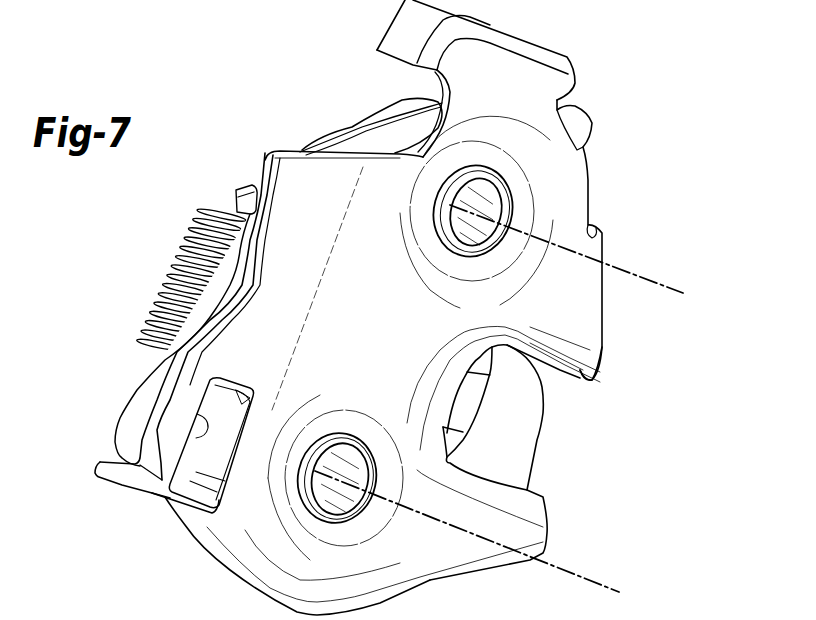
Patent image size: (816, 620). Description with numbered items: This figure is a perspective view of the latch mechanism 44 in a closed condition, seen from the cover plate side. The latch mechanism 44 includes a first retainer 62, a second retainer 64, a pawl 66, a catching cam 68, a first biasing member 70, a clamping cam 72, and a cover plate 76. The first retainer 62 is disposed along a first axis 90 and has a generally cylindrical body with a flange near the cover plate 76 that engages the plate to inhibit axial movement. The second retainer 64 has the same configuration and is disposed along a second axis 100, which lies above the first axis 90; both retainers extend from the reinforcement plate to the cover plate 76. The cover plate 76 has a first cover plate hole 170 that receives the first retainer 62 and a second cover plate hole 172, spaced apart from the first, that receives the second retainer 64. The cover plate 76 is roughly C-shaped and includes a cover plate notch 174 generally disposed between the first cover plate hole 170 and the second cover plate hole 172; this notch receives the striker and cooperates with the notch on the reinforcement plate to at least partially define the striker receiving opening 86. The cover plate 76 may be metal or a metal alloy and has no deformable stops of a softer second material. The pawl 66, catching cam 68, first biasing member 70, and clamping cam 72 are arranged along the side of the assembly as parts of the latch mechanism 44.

The latch mechanism 44 is at (195, 56).
The first retainer 62 is at (357, 446).
The second retainer 64 is at (497, 180).
The pawl 66 is at (130, 386).
The catching cam 68 is at (240, 185).
The first biasing member 70 is at (172, 263).
The clamping cam 72 is at (347, 130).
The cover plate 76 is at (225, 570).
The striker receiving opening 86 is at (547, 459).
The first axis 90 is at (606, 585).
The second axis 100 is at (650, 268).
The first cover plate hole 170 is at (367, 507).
The second cover plate hole 172 is at (513, 207).
The cover plate notch 174 is at (587, 380).